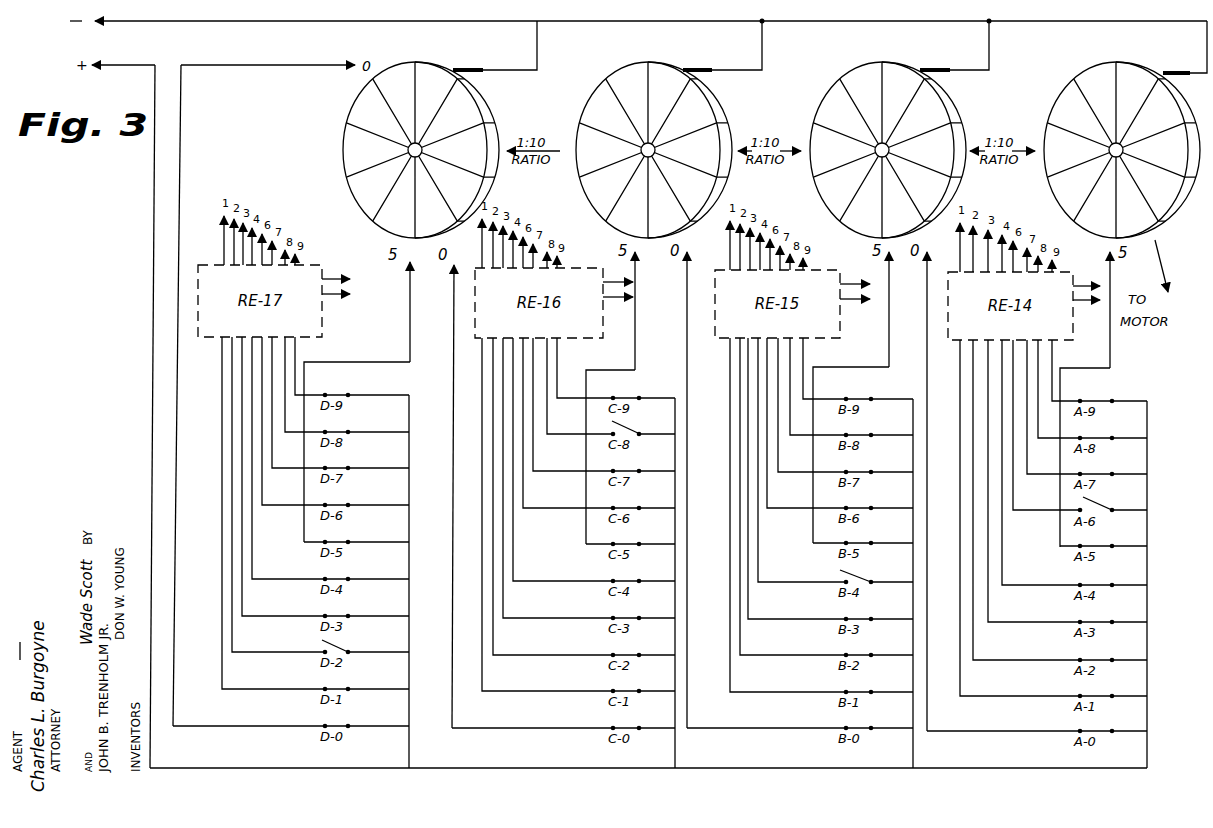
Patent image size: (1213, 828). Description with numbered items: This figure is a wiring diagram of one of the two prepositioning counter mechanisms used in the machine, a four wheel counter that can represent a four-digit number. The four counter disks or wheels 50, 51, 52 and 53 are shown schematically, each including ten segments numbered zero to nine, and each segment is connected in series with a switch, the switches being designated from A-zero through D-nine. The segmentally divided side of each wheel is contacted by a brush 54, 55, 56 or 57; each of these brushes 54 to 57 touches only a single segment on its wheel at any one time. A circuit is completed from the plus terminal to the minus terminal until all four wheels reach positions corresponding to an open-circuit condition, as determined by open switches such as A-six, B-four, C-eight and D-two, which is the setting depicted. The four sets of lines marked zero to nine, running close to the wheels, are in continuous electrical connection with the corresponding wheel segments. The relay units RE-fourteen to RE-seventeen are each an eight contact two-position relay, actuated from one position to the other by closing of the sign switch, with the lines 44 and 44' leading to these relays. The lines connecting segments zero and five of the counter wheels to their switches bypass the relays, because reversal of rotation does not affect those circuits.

The counter wheel 50 is at (1092, 62).
The counter wheel 51 is at (873, 62).
The counter wheel 52 is at (640, 62).
The counter wheel 53 is at (407, 62).
The brush 54 is at (1166, 70).
The brush 55 is at (925, 67).
The brush 56 is at (688, 67).
The brush 57 is at (456, 67).
The line 44 is at (711, 263).
The line 44' is at (712, 312).